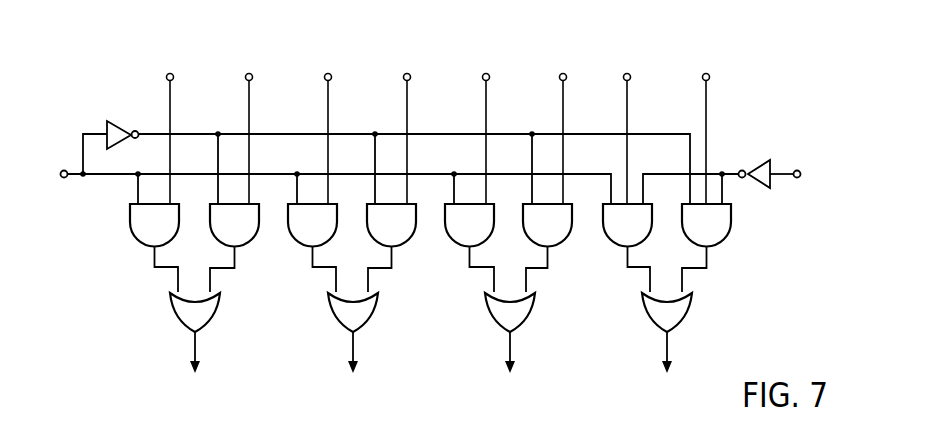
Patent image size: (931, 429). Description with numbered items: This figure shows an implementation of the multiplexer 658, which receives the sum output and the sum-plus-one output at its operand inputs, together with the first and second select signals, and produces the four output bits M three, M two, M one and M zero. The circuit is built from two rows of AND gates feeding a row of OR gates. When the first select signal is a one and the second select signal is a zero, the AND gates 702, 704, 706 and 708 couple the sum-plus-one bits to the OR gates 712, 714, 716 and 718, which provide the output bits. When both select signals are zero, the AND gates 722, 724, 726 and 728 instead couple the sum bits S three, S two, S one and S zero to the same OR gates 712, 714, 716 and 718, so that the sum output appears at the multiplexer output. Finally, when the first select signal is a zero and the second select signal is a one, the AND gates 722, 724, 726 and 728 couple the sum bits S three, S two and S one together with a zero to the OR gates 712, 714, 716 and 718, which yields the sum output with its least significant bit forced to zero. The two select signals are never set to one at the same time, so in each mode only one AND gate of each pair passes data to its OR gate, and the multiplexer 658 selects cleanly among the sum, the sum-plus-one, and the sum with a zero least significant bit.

The multiplexer 658 is at (93, 78).
The AND gate 702 is at (131, 232).
The AND gate 722 is at (211, 232).
The AND gate 704 is at (292, 232).
The AND gate 724 is at (370, 232).
The AND gate 706 is at (445, 232).
The AND gate 726 is at (523, 232).
The AND gate 708 is at (603, 232).
The AND gate 728 is at (683, 232).
The OR gate 712 is at (174, 321).
The OR gate 714 is at (333, 321).
The OR gate 716 is at (489, 321).
The OR gate 718 is at (647, 321).